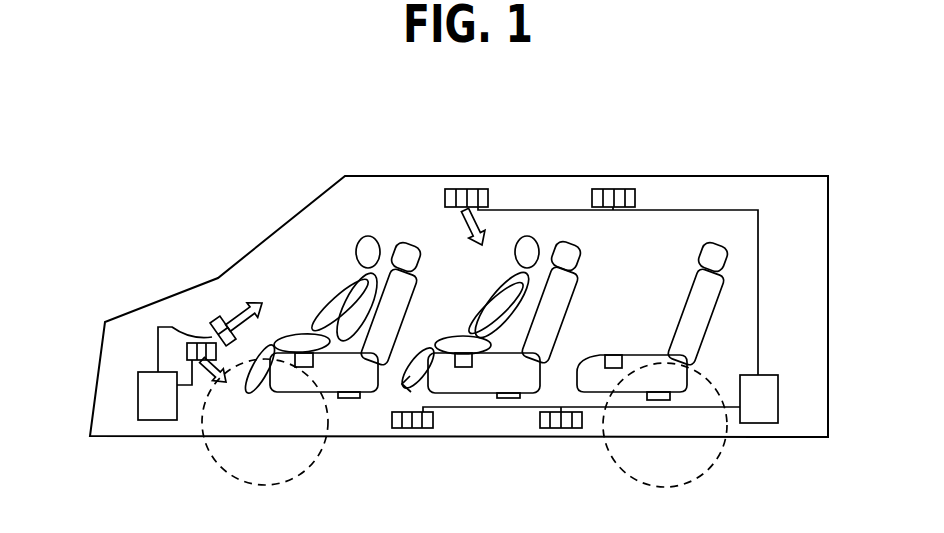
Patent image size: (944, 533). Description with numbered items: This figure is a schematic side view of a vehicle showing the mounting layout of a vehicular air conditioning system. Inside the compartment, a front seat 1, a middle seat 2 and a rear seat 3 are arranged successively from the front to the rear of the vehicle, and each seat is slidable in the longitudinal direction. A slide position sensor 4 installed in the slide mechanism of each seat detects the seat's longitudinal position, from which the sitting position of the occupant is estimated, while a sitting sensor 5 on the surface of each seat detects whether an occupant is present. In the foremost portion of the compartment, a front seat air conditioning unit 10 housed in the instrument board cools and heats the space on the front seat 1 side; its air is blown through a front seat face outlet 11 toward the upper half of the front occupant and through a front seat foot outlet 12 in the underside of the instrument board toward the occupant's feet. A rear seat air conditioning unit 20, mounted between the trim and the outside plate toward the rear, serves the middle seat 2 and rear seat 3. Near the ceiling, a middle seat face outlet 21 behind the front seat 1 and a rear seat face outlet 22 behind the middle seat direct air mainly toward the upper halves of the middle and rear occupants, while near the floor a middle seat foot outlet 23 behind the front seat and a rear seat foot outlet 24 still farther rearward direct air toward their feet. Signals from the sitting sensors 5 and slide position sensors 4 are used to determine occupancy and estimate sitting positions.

The front seat 1 is at (283, 373).
The middle seat 2 is at (452, 382).
The rear seat 3 is at (597, 383).
The slide position sensor 4 is at (350, 398).
The sitting sensor 5 is at (313, 367).
The front seat air conditioning unit 10 is at (150, 387).
The front seat face outlet 11 is at (210, 328).
The front seat foot outlet 12 is at (187, 352).
The rear seat air conditioning unit 20 is at (757, 405).
The middle seat face outlet 21 is at (470, 195).
The rear seat face outlet 22 is at (618, 195).
The middle seat foot outlet 23 is at (415, 428).
The rear seat foot outlet 24 is at (562, 428).